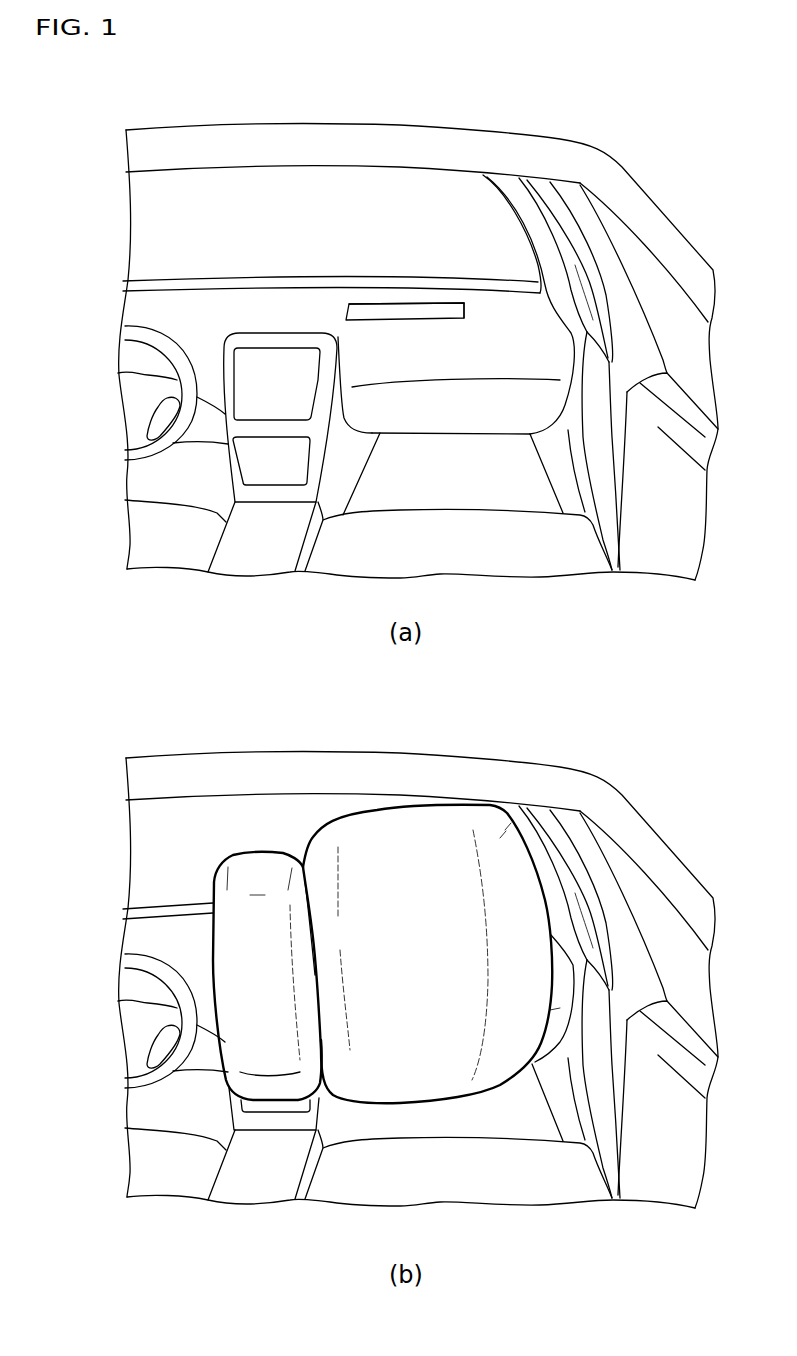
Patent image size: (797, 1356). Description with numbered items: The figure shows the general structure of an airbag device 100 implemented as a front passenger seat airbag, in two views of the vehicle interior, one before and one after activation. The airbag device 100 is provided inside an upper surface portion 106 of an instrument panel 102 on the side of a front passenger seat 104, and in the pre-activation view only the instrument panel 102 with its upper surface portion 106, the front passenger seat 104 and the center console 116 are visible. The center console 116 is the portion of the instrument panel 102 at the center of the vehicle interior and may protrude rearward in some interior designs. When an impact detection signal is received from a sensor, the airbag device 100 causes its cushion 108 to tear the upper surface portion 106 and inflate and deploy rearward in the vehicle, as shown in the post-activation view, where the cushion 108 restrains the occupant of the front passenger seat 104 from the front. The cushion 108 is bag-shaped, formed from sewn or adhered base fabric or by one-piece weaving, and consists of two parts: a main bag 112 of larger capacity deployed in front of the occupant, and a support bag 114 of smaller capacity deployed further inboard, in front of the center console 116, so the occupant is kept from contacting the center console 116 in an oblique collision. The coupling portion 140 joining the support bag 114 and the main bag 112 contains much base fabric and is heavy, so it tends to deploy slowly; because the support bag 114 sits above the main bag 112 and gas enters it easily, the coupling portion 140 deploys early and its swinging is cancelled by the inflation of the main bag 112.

The airbag device 100 is at (430, 295).
The instrument panel 102 is at (365, 293).
The front passenger seat 104 is at (430, 530).
The upper surface portion 106 is at (464, 312).
The cushion 108 is at (406, 815).
The main bag 112 is at (502, 837).
The support bag 114 is at (257, 862).
The center console 116 is at (262, 427).
The coupling portion 140 is at (310, 933).